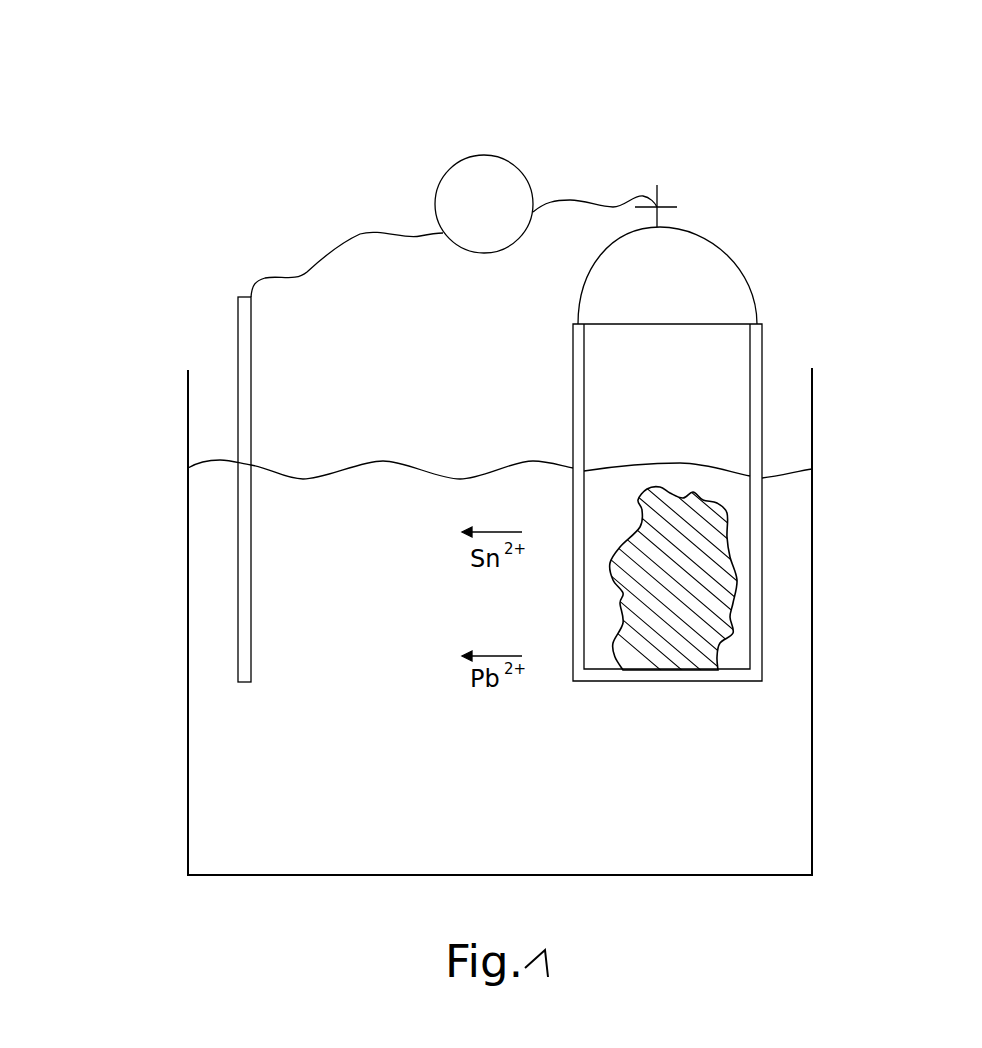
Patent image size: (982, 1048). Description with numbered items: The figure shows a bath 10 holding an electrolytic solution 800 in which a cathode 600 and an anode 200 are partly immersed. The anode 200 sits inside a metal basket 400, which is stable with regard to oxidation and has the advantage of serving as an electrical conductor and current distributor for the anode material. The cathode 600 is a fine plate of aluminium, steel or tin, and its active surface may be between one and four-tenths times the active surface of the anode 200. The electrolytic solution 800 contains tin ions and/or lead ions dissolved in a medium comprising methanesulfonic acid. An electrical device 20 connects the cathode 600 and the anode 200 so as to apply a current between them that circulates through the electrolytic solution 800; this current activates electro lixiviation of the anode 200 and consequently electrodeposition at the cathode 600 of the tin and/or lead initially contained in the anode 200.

The bath 10 is at (187, 405).
The electrical device 20 is at (484, 155).
The anode 200 is at (717, 570).
The metal basket 400 is at (763, 332).
The cathode 600 is at (237, 603).
The electrolytic solution 800 is at (240, 768).